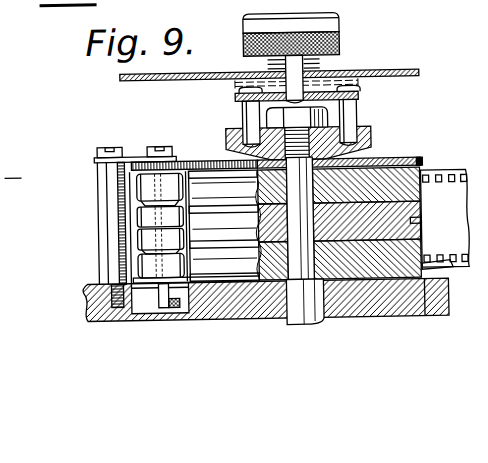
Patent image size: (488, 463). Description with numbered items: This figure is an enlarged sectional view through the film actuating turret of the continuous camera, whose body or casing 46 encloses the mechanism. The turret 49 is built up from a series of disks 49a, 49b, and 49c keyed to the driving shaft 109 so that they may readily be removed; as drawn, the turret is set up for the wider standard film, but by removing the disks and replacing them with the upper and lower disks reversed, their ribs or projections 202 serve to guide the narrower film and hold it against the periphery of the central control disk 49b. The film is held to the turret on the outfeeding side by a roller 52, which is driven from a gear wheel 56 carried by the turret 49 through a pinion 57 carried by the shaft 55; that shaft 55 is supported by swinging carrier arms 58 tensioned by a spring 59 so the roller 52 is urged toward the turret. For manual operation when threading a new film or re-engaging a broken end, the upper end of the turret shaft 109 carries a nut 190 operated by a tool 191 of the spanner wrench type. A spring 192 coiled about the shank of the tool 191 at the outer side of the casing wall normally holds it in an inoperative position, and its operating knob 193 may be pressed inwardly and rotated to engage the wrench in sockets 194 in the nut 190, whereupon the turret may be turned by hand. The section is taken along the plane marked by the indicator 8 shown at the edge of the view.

The section indicator arrow 8 is at (17, 168).
The casing 46 is at (396, 72).
The film actuating turret 49 is at (240, 249).
The disk 49a is at (424, 181).
The central control disk 49b is at (413, 224).
The disk 49c is at (441, 271).
The roller 52 is at (140, 208).
The shaft 55 is at (152, 181).
The gear wheel 56 is at (203, 158).
The pinion 57 is at (136, 156).
The swinging carrier arms 58 is at (141, 282).
The spring 59 is at (163, 308).
The driving shaft 109 is at (302, 308).
The nut 190 is at (372, 135).
The tool 191 is at (359, 112).
The spring 192 is at (303, 59).
The operating knob 193 is at (343, 36).
The sockets 194 is at (230, 132).
The ribs 202 is at (421, 163).